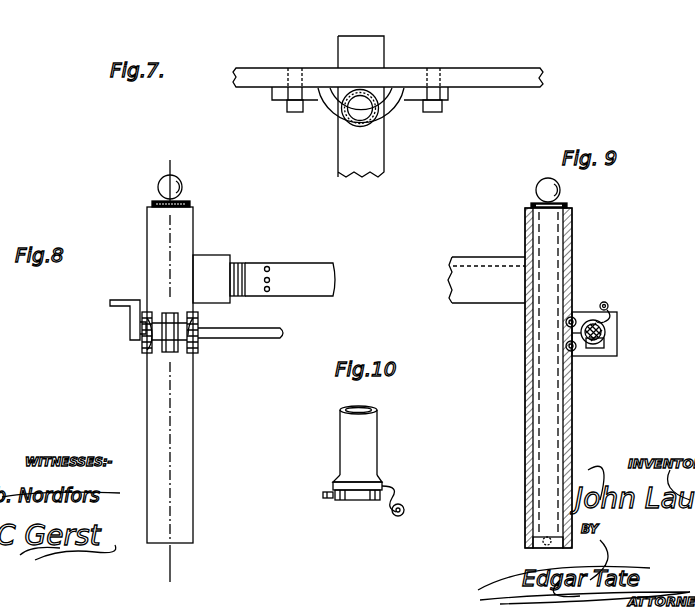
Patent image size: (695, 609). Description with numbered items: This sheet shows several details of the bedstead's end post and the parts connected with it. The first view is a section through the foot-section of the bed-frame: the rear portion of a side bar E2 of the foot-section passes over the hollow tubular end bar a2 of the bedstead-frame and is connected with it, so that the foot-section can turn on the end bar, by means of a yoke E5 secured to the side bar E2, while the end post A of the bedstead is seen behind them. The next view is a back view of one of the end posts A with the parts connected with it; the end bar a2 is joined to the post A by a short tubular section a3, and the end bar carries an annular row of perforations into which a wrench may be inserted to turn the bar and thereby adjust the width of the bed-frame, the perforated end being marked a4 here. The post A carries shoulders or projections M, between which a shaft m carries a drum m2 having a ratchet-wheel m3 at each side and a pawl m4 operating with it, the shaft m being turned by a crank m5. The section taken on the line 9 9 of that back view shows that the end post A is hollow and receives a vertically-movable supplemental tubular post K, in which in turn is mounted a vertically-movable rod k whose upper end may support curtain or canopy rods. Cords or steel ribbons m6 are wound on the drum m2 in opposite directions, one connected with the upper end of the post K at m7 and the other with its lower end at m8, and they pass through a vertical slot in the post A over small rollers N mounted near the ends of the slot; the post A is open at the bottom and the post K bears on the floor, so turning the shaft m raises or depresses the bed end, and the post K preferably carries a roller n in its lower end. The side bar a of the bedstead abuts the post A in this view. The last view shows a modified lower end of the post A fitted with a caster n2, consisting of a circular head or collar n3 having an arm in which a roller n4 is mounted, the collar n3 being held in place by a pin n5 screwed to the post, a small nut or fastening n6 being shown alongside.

In FIG. 7, the end post A is at (374, 47).
In FIG. 8, the end post A is at (148, 414).
In FIG. 9, the end post A is at (525, 226).
In FIG. 10, the end post A is at (345, 430).
In FIG. 7, the side bar of foot-section E2 is at (492, 76).
In FIG. 7, the yoke E5 is at (323, 115).
In FIG. 7, the end bar a2 is at (362, 110).
In FIG. 8, the end bar a2 is at (317, 268).
In FIG. 8, the short tubular section a3 is at (208, 260).
In FIG. 8, the ribbed coupling a4 is at (272, 265).
In FIG. 8, the section line 9 9 is at (168, 373).
In FIG. 8, the shaft m is at (285, 328).
In FIG. 8, the drum m2 is at (172, 342).
In FIG. 9, the drum m2 is at (598, 345).
In FIG. 8, the ratchet-wheel m3 is at (187, 314).
In FIG. 9, the ratchet-wheel m3 is at (588, 324).
In FIG. 8, the crank m5 is at (118, 309).
In FIG. 8, the shoulder or projection M is at (140, 353).
In FIG. 9, the shoulder or projection M is at (612, 335).
In FIG. 9, the vertically-movable rod k is at (560, 198).
In FIG. 9, the upper cord connection m7 is at (558, 221).
In FIG. 9, the supplemental tubular post K is at (548, 408).
In FIG. 9, the side bar a is at (486, 280).
In FIG. 9, the small roller N is at (565, 322).
In FIG. 9, the pawl m4 is at (613, 310).
In FIG. 9, the cord or steel ribbon m6 is at (583, 331).
In FIG. 9, the lower cord connection m8 is at (547, 535).
In FIG. 9, the roller n is at (540, 549).
In FIG. 10, the caster n2 is at (392, 490).
In FIG. 10, the circular head or collar n3 is at (333, 481).
In FIG. 10, the roller n4 is at (405, 515).
In FIG. 10, the pin n5 is at (362, 500).
In FIG. 10, the set nut n6 is at (325, 498).